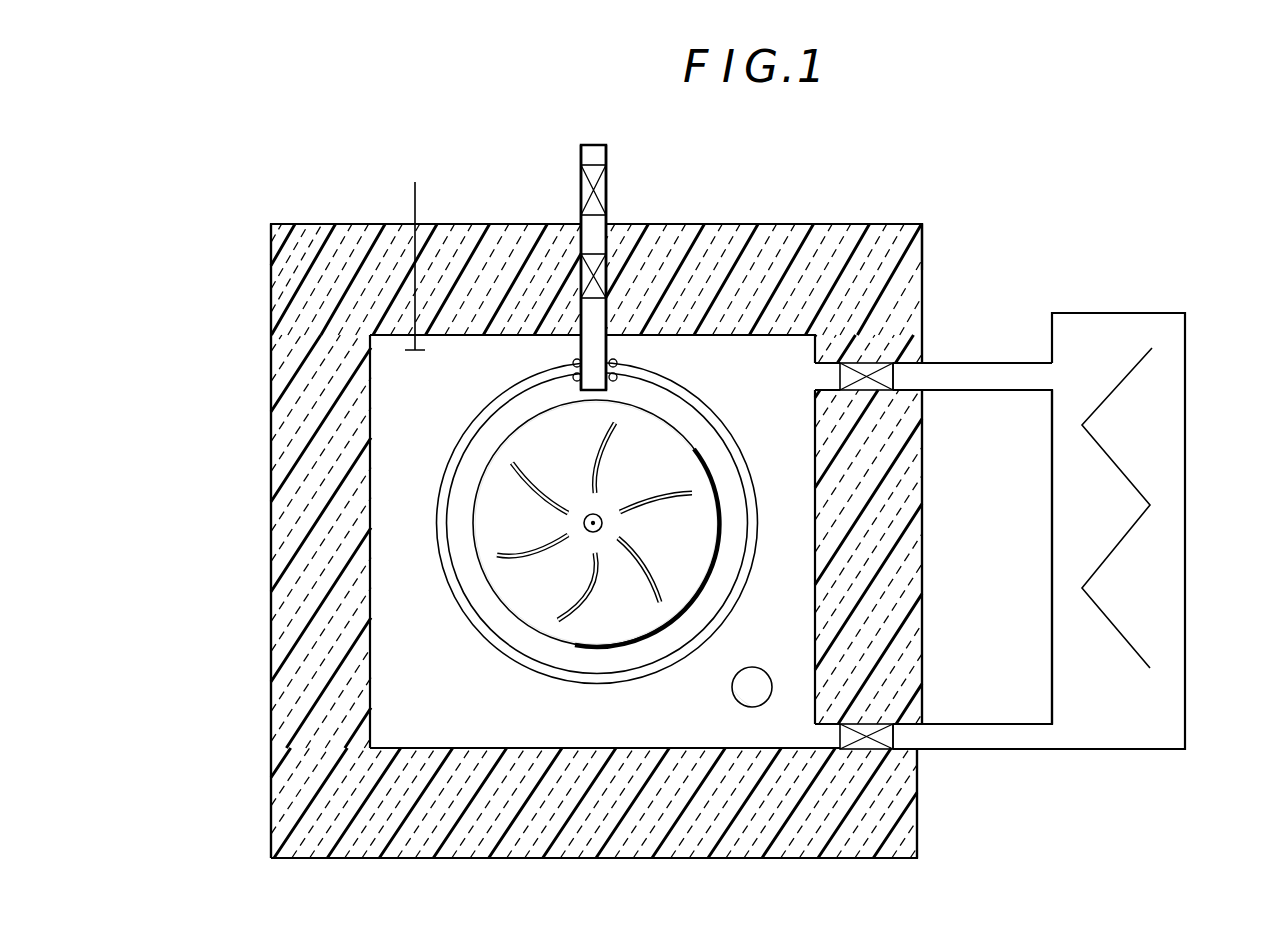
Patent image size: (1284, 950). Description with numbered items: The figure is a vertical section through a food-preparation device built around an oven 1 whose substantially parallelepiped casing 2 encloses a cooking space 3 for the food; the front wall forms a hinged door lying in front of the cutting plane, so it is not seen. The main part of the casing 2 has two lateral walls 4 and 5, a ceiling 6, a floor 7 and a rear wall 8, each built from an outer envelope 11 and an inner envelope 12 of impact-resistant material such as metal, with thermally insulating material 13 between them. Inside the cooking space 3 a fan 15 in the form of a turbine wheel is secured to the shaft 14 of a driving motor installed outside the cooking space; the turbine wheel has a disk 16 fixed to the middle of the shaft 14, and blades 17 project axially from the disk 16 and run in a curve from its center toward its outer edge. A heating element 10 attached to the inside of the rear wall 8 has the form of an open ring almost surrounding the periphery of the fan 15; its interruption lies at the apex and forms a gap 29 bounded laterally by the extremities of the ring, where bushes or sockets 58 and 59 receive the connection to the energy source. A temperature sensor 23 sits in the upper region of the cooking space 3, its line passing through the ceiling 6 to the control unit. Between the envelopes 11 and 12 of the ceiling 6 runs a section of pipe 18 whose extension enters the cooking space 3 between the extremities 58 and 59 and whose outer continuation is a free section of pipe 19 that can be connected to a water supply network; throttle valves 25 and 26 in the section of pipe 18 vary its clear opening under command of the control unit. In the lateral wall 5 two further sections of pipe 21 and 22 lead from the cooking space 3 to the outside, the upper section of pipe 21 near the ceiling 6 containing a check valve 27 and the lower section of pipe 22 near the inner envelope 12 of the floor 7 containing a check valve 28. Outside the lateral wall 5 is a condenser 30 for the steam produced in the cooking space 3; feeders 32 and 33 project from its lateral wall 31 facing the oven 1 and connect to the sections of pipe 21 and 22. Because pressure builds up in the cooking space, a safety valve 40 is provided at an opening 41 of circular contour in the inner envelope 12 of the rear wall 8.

The oven 1 is at (221, 203).
The casing 2 is at (266, 392).
The cooking space 3 is at (393, 577).
The lateral wall 4 is at (272, 300).
The lateral wall 5 is at (922, 296).
The ceiling 6 is at (318, 224).
The floor 7 is at (330, 857).
The rear wall 8 is at (424, 419).
The heating element 10 is at (495, 650).
The outer envelope 11 is at (815, 226).
The inner envelope 12 is at (522, 748).
The thermally insulating material 13 is at (905, 235).
The shaft 14 is at (588, 531).
The fan 15 is at (697, 447).
The disk 16 is at (654, 476).
The blades 17 is at (690, 485).
The section of pipe 18 is at (612, 237).
The free section of pipe 19 is at (612, 195).
The section of pipe 21 is at (905, 365).
The section of pipe 22 is at (905, 722).
The temperature sensor 23 is at (565, 430).
The throttle valve 25 is at (583, 272).
The throttle valve 26 is at (583, 190).
The check valve 27 is at (893, 376).
The check valve 28 is at (893, 738).
The gap 29 is at (1130, 365).
The condenser 30 is at (1185, 605).
The lateral wall 31 is at (1045, 572).
The feeder 32 is at (1005, 363).
The feeder 33 is at (1025, 750).
The safety valve 40 is at (770, 673).
The opening 41 is at (733, 690).
The bush or socket 58 is at (573, 363).
The bush or socket 59 is at (617, 363).